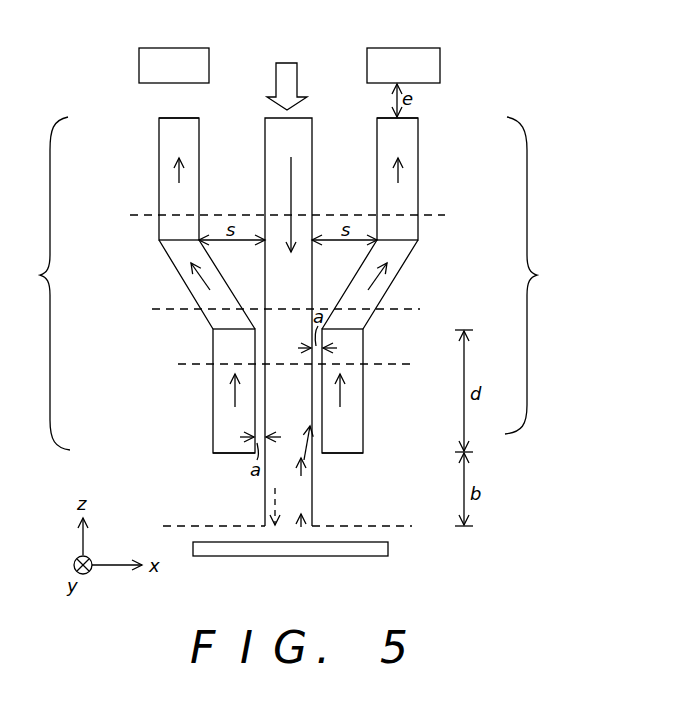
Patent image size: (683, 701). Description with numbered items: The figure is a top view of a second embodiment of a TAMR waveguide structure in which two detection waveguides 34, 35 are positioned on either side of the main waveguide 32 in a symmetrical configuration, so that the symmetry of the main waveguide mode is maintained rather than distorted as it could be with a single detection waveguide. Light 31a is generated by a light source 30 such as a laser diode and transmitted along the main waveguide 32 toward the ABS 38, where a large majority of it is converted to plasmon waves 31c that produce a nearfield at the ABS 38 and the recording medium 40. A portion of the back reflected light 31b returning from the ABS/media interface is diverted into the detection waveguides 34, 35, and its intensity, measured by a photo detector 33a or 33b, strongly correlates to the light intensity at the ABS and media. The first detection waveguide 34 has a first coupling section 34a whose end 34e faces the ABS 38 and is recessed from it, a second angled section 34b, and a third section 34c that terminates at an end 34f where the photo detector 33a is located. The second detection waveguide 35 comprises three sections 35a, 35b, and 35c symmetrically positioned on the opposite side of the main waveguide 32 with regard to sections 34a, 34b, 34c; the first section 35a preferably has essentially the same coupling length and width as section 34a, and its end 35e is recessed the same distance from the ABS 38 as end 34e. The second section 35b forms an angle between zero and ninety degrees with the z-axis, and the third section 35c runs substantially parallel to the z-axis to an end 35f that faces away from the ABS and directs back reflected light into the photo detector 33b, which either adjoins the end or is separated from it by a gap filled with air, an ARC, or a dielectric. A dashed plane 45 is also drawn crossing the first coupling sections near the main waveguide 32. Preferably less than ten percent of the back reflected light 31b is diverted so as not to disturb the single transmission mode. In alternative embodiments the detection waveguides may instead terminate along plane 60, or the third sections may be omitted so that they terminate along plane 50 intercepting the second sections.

The light source 30 is at (276, 86).
The light 31a is at (291, 190).
The back reflected light 31b is at (178, 181).
The plasmon waves 31c is at (267, 505).
The main waveguide 32 is at (276, 130).
The photo detector 33a is at (425, 63).
The photo detector 33b is at (152, 64).
The detection waveguide 34 is at (536, 275).
The first section 34a is at (340, 430).
The second section 34b is at (405, 253).
The third section 34c is at (408, 147).
The end 34e is at (352, 453).
The end 34f is at (412, 119).
The detection waveguide 35 is at (40, 283).
The first section 35a is at (225, 343).
The second section 35b is at (172, 254).
The third section 35c is at (168, 147).
The end 35e is at (228, 453).
The end 35f is at (159, 118).
The ABS 38 is at (287, 528).
The recording medium 40 is at (212, 547).
The reference plane 45 is at (294, 365).
The plane 50 is at (286, 310).
The plane 60 is at (289, 218).